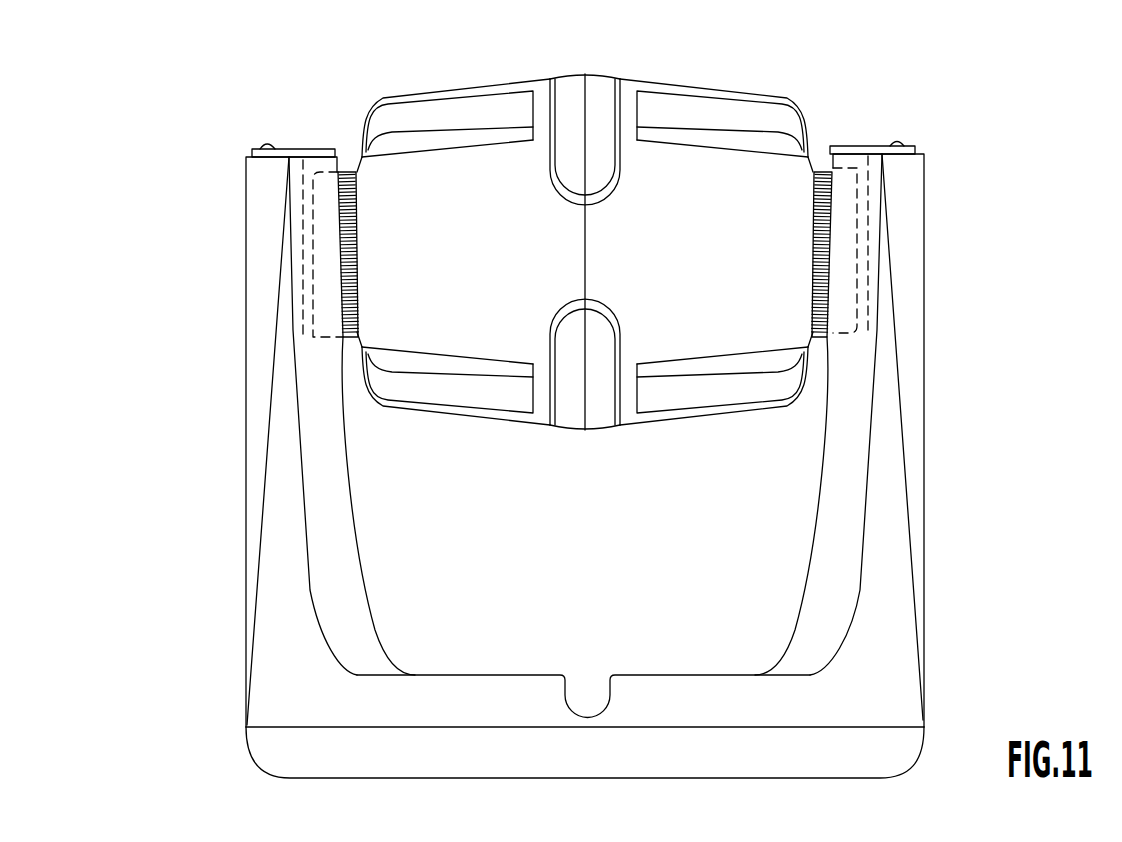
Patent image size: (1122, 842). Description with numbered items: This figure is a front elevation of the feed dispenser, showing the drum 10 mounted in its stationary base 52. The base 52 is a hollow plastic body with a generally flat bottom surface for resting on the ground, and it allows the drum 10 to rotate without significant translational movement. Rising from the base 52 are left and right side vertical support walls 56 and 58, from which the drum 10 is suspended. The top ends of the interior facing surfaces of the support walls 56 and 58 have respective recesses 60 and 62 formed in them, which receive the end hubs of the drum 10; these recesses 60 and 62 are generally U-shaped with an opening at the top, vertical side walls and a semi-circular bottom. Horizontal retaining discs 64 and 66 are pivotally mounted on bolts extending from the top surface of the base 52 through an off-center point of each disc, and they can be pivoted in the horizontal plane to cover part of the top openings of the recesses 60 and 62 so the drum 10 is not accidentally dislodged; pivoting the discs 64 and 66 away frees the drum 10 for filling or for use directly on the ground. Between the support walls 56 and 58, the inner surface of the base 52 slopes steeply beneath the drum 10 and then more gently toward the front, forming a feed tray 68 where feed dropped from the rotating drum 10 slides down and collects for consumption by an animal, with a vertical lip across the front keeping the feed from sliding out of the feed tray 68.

The drum 10 is at (692, 76).
The stationary base 52 is at (962, 500).
The left side vertical support wall 56 is at (918, 247).
The right side vertical support wall 58 is at (252, 246).
The recess 60 is at (848, 167).
The recess 62 is at (315, 166).
The horizontal retaining disc 64 is at (876, 148).
The horizontal retaining disc 66 is at (296, 152).
The feed tray 68 is at (722, 660).